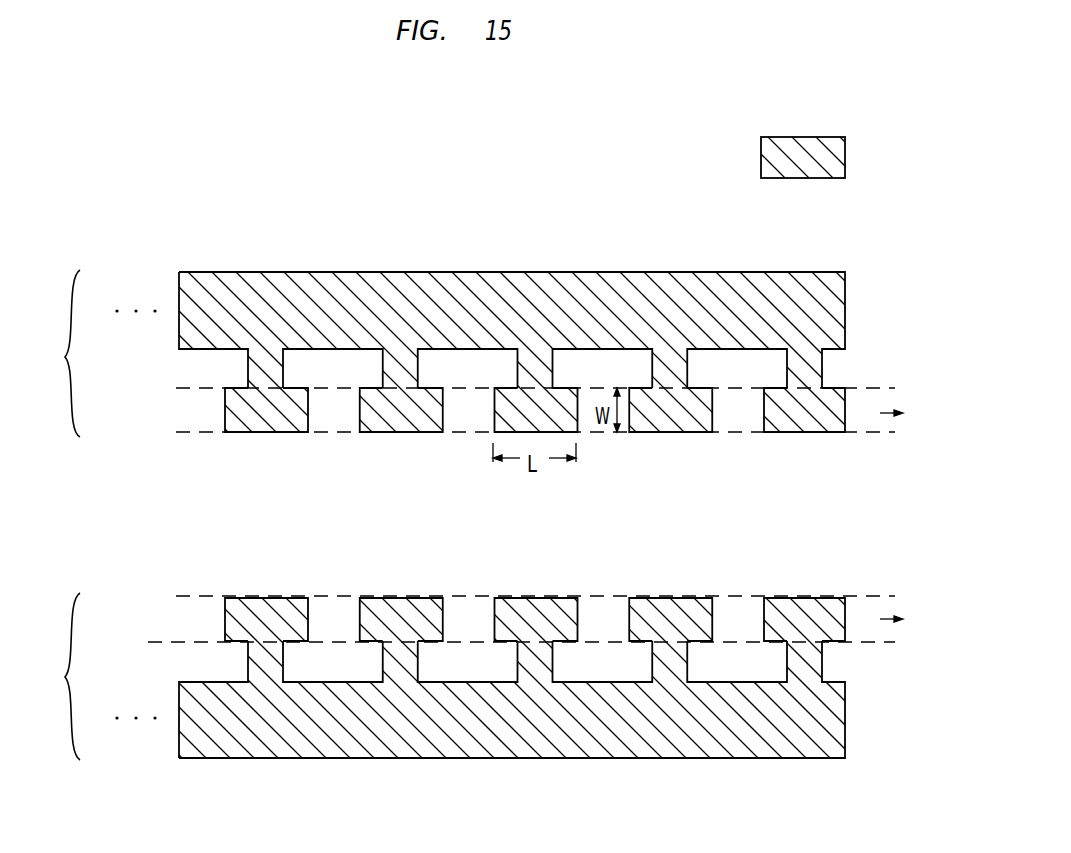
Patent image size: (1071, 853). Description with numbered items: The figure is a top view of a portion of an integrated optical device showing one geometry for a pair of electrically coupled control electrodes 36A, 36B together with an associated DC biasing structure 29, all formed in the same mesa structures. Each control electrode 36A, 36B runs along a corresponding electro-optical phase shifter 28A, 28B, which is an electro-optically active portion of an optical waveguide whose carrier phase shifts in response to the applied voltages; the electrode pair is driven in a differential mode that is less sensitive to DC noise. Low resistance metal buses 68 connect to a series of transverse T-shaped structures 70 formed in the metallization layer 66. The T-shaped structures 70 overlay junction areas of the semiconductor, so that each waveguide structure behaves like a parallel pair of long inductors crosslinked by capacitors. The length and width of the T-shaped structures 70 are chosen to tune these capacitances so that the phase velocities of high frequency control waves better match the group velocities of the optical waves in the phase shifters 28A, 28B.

The DC biasing structure 29 is at (746, 157).
The metallization layer 66 is at (858, 127).
The metal buses 68 is at (846, 274).
The T-shaped structures 70 is at (251, 437).
The control electrode 36A is at (622, 254).
The control electrode 36B is at (621, 776).
The electro-optical phase shifter 28A is at (164, 435).
The electro-optical phase shifter 28B is at (160, 600).